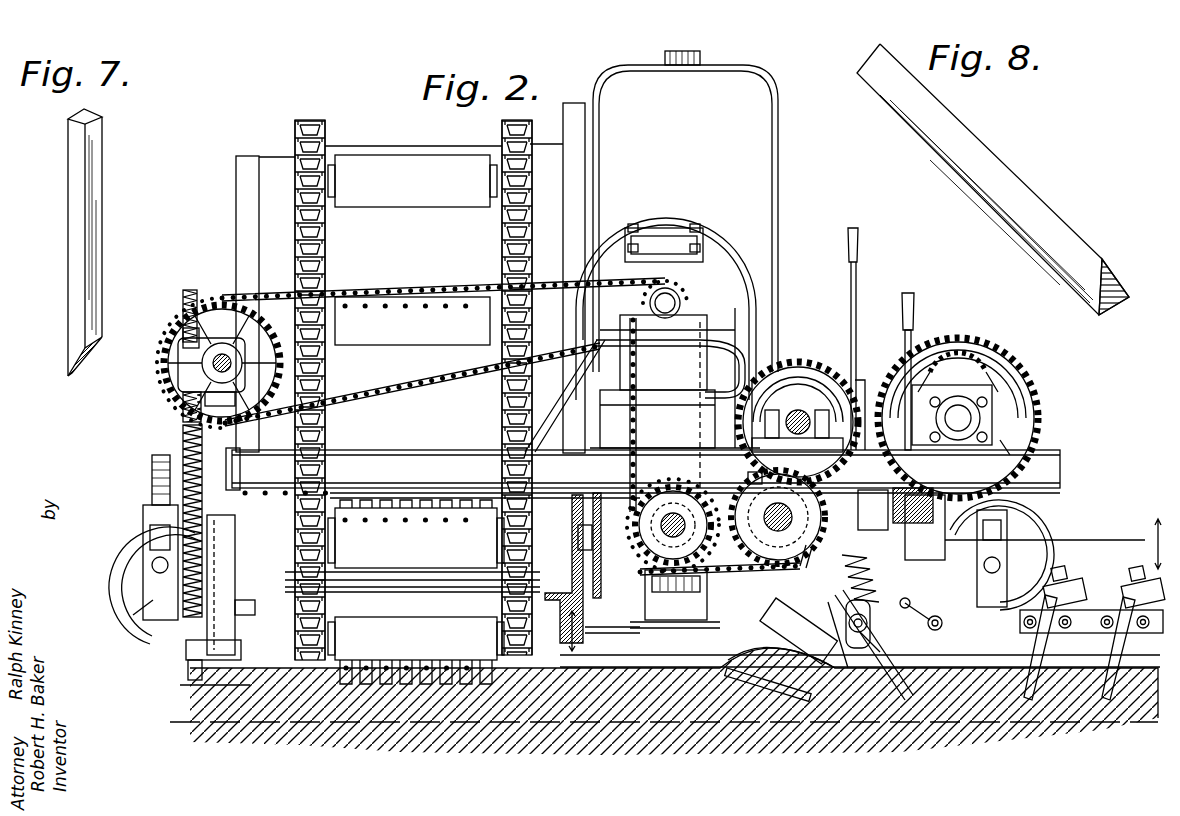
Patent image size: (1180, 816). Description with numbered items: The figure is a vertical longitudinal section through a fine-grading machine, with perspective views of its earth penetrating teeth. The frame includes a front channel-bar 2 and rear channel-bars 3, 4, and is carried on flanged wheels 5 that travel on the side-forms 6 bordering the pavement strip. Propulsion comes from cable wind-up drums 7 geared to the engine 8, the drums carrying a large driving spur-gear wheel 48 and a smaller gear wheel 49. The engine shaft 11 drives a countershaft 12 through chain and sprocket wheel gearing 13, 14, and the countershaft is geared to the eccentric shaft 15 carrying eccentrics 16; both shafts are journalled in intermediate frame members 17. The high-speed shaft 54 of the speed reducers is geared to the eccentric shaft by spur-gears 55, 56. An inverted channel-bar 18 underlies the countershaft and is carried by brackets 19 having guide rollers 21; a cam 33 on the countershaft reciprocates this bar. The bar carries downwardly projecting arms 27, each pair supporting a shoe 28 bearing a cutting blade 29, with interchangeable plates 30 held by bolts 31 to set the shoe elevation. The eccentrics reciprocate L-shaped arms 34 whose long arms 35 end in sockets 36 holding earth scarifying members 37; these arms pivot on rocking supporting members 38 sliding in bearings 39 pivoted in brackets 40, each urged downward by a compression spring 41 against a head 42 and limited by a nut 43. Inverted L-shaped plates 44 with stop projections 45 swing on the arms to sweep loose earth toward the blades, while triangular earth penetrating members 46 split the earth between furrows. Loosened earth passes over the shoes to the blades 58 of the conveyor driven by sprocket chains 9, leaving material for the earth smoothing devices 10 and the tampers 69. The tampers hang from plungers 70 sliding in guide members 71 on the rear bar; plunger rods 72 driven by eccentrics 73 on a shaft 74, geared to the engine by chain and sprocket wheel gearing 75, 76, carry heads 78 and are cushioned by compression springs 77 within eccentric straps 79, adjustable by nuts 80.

In FIG. 2, the front channel-bar 2 is at (905, 498).
In FIG. 2, the rear channel-bar 3 is at (606, 492).
In FIG. 2, the rear channel-bar 4 is at (247, 500).
In FIG. 2, the flanged wheels 5 is at (128, 545).
In FIG. 2, the side-forms 6 is at (647, 591).
In FIG. 2, the cable wind-up drums 7 is at (1003, 375).
In FIG. 2, the engine 8 is at (778, 108).
In FIG. 2, the sprocket chains 9 is at (532, 236).
In FIG. 2, the earth smoothing devices 10 is at (245, 648).
In FIG. 2, the engine shaft 11 is at (676, 296).
In FIG. 2, the countershaft 12 is at (674, 505).
In FIG. 2, the chain and sprocket wheel gearing 13 is at (637, 436).
In FIG. 2, the chain and sprocket wheel gearing 14 is at (658, 283).
In FIG. 2, the eccentric shaft 15 is at (738, 566).
In FIG. 2, the eccentrics 16 is at (802, 496).
In FIG. 2, the intermediate frame members 17 is at (1060, 452).
In FIG. 2, the inverted channel-bar 18 is at (584, 610).
In FIG. 2, the brackets 19 is at (578, 546).
In FIG. 2, the guide rollers 21 is at (640, 630).
In FIG. 2, the downwardly projecting arms 27 is at (723, 666).
In FIG. 2, the shoe 28 is at (765, 667).
In FIG. 2, the cutting blade 29 is at (806, 670).
In FIG. 2, the interchangeable blocks or plates 30 is at (676, 595).
In FIG. 2, the bolts 31 is at (688, 625).
In FIG. 2, the cam 33 is at (485, 482).
In FIG. 2, the arms 34 is at (800, 560).
In FIG. 2, the long arms 35 is at (998, 630).
In FIG. 2, the sockets 36 is at (1075, 585).
In FIG. 7, the earth scarifying members 37 is at (96, 365).
In FIG. 2, the earth scarifying members 37 is at (1045, 646).
In FIG. 2, the rocking supporting members 38 is at (845, 667).
In FIG. 2, the bearings 39 is at (910, 603).
In FIG. 2, the brackets 40 is at (978, 540).
In FIG. 2, the compression spring 41 is at (868, 590).
In FIG. 2, the head 42 is at (815, 631).
In FIG. 2, the nut 43 is at (862, 505).
In FIG. 2, the inverted L-shaped plates 44 is at (870, 646).
In FIG. 2, the stop projections 45 is at (928, 623).
In FIG. 8, the earth penetrating members 46 is at (1104, 258).
In FIG. 2, the earth penetrating members 46 is at (888, 717).
In FIG. 2, the driving spur-gear wheel 48 is at (1003, 380).
In FIG. 2, the smaller gear wheel 49 is at (1004, 398).
In FIG. 2, the high-speed shaft 54 is at (800, 412).
In FIG. 2, the spur-gear 55 is at (748, 476).
In FIG. 2, the spur-gear 56 is at (805, 362).
In FIG. 2, the blades 58 is at (372, 158).
In FIG. 2, the tampers 69 is at (196, 700).
In FIG. 2, the plungers 70 is at (237, 614).
In FIG. 2, the guide members 71 is at (222, 515).
In FIG. 2, the plunger rods 72 is at (191, 295).
In FIG. 2, the eccentrics 73 is at (205, 392).
In FIG. 2, the shaft 74 is at (213, 365).
In FIG. 2, the chain and sprocket wheel gearing 75 is at (405, 296).
In FIG. 2, the chain and sprocket wheel gearing 76 is at (262, 333).
In FIG. 2, the compression springs 77 is at (183, 430).
In FIG. 2, the heads 78 is at (185, 630).
In FIG. 2, the eccentric straps 79 is at (200, 352).
In FIG. 2, the nuts 80 is at (184, 334).